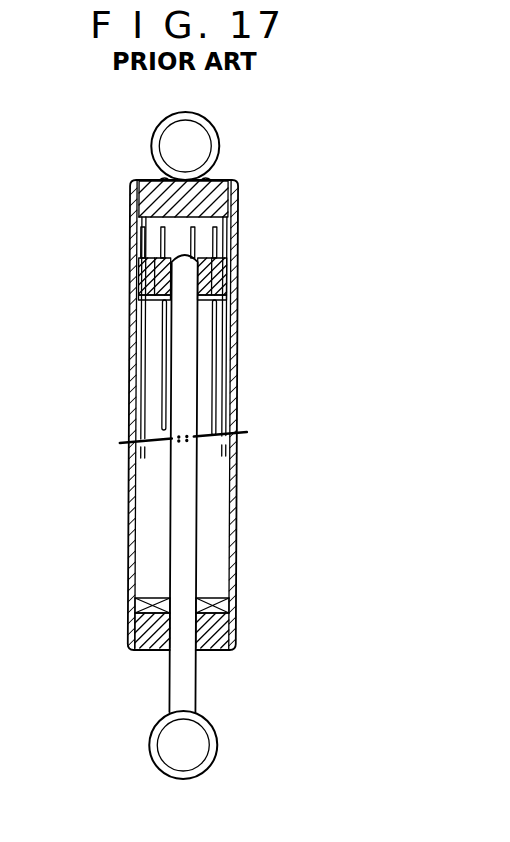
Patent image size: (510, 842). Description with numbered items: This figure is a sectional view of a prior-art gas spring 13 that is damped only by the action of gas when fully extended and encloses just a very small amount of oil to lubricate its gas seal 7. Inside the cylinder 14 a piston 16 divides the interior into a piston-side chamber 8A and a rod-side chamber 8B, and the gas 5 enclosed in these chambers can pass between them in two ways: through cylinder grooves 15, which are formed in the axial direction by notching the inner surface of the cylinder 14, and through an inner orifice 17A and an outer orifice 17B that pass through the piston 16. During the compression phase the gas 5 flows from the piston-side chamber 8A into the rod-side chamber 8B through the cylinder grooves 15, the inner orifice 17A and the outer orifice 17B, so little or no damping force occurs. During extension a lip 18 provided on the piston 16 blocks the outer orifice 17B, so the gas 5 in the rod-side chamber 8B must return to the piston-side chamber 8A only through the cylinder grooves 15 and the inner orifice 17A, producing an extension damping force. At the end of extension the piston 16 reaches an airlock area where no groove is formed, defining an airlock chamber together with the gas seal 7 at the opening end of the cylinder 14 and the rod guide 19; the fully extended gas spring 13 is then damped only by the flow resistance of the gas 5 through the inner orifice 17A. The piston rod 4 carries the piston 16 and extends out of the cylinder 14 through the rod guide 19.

The piston rod 4 is at (200, 672).
The gas 5 is at (147, 522).
The gas seal 7 is at (220, 609).
The piston-side chamber 8A is at (226, 211).
The rod-side chamber 8B is at (220, 533).
The gas spring 13 is at (290, 258).
The cylinder 14 is at (133, 409).
The cylinder grooves 15 is at (143, 370).
The piston 16 is at (233, 277).
The inner orifice 17A is at (143, 240).
The outer orifice 17B is at (148, 273).
The lip 18 is at (145, 302).
The rod guide 19 is at (150, 618).